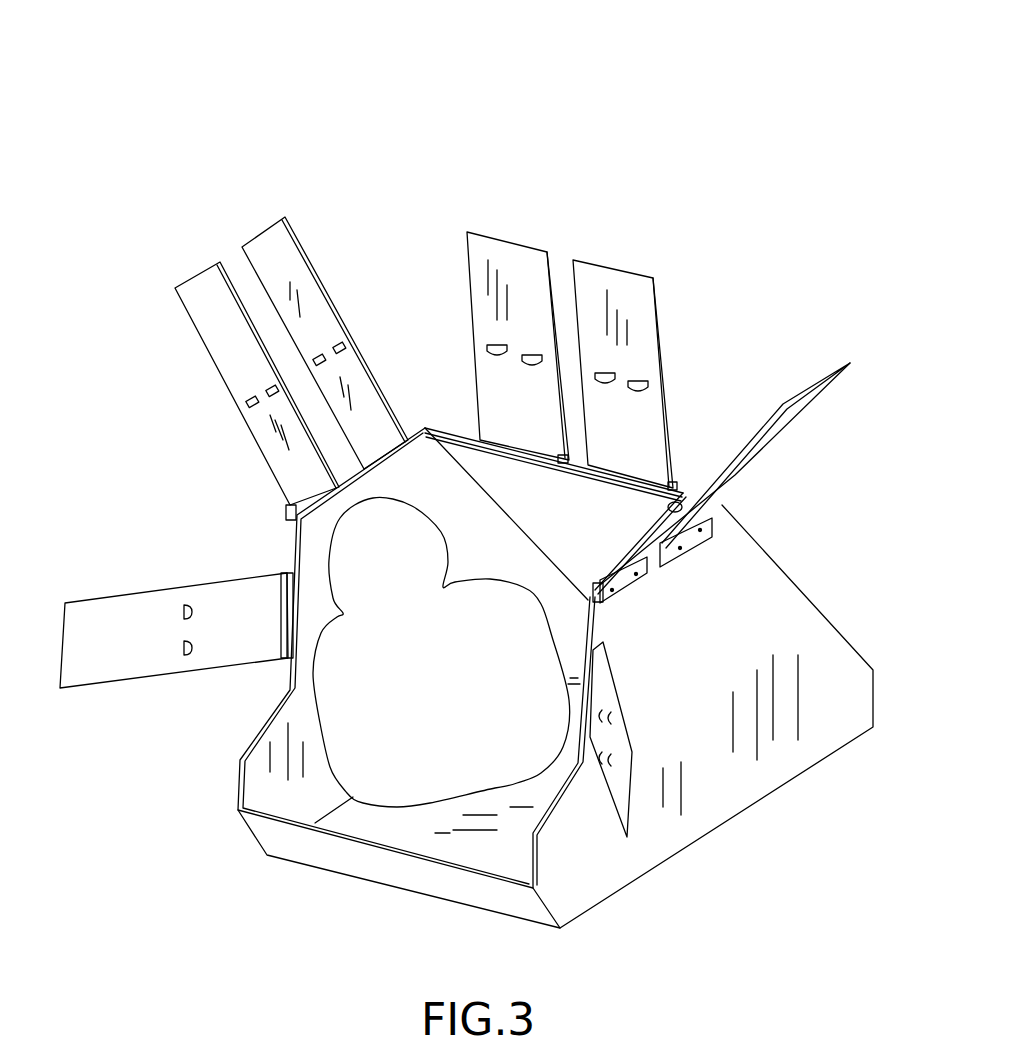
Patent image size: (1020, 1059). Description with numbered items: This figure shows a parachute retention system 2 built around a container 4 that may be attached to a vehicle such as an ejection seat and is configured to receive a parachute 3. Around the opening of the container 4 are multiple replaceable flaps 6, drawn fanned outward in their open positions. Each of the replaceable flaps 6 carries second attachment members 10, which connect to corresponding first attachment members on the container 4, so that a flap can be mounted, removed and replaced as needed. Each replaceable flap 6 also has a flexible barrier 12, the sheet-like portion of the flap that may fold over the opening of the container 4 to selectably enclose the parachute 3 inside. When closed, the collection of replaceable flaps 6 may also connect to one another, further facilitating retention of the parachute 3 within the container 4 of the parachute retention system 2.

The parachute retention system 2 is at (555, 77).
The parachute 3 is at (425, 572).
The container 4 is at (770, 593).
The replaceable flaps 6 is at (476, 464).
The second attachment members 10 is at (387, 447).
The flexible barrier 12 is at (197, 282).